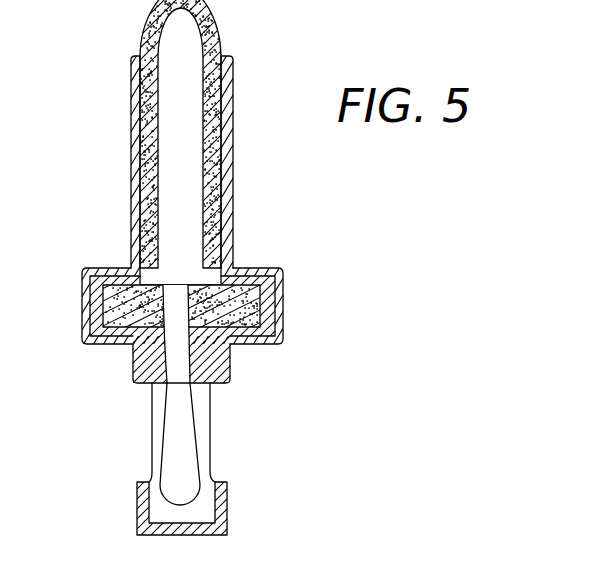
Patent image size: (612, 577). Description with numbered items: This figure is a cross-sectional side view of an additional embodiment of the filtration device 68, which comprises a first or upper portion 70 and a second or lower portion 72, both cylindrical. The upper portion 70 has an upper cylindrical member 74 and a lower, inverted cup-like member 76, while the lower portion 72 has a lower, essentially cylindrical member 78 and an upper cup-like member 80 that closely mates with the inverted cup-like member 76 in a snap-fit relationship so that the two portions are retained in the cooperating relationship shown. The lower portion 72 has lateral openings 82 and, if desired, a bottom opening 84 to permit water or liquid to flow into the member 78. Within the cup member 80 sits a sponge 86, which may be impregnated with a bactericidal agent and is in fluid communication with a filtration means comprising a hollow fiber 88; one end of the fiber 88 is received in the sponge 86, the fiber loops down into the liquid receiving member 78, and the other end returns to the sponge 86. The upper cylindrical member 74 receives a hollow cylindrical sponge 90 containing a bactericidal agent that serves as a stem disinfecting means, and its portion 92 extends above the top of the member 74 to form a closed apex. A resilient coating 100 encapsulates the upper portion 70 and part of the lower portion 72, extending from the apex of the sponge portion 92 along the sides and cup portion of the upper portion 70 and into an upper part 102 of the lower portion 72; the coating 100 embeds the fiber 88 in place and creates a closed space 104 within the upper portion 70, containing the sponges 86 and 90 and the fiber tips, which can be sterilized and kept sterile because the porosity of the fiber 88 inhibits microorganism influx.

The device 68 is at (282, 212).
The upper portion 70 is at (244, 167).
The lower portion 72 is at (284, 430).
The upper cylindrical member 74 is at (229, 120).
The lower inverted cup-like member 76 is at (266, 290).
The lower cylindrical member 78 is at (228, 511).
The upper cup-like member 80 is at (262, 322).
The lateral openings 82 is at (211, 410).
The bottom opening 84 is at (178, 530).
The sponge 86 is at (100, 304).
The hollow fiber 88 is at (201, 443).
The hollow cylindrical sponge 90 is at (160, 150).
The sponge portion 92 is at (189, 32).
The resilient coating 100 is at (131, 110).
The upper part 102 is at (132, 367).
The closed space 104 is at (183, 97).